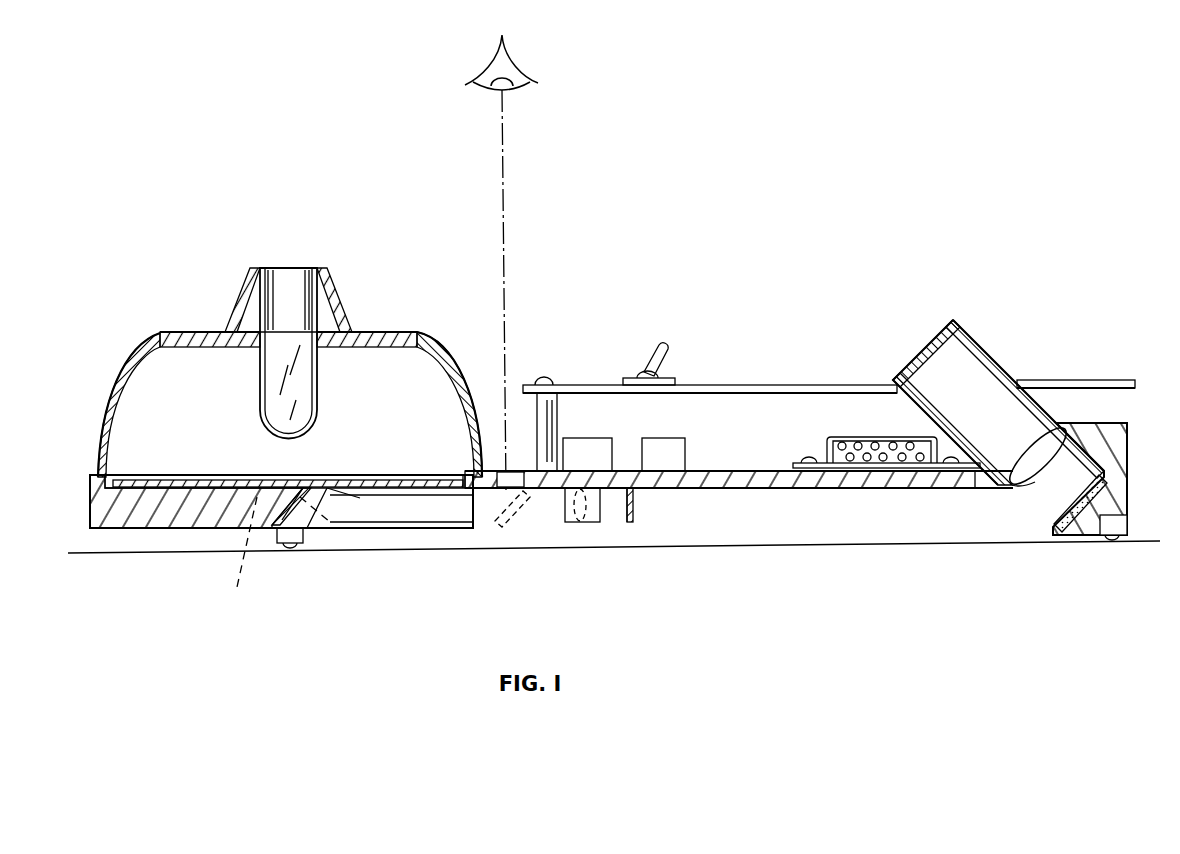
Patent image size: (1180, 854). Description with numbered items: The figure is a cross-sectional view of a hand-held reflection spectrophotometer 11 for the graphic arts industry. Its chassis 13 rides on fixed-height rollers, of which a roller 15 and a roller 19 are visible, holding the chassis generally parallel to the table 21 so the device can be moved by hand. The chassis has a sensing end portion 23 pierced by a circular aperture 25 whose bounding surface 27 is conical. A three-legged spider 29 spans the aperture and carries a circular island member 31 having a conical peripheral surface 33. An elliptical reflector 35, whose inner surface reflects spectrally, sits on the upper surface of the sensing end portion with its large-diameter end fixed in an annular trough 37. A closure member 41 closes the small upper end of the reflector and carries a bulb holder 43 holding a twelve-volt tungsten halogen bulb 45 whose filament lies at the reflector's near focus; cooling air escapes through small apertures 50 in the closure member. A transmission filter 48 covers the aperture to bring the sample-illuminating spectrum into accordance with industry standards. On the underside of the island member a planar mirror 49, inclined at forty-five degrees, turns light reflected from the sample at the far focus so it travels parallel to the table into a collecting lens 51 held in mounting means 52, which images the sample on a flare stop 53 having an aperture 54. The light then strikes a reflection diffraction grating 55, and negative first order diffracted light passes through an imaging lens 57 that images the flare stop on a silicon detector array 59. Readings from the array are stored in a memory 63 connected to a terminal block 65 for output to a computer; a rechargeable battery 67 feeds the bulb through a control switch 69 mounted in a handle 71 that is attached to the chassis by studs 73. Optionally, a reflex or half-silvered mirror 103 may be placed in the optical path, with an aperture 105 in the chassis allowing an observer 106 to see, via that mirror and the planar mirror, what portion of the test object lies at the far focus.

The spectrophotometer 11 is at (697, 353).
The chassis 13 is at (740, 488).
The roller 15 is at (297, 546).
The roller 19 is at (1123, 524).
The table 21 is at (82, 553).
The sensing end portion 23 is at (75, 488).
The aperture 25 is at (335, 525).
The bounding surface 27 is at (365, 525).
The three-legged spider 29 is at (180, 493).
The island member 31 is at (283, 493).
The conical peripheral surface 33 is at (333, 523).
The reflector 35 is at (453, 349).
The annular trough 37 is at (479, 512).
The closure member 41 is at (183, 337).
The bulb holder 43 is at (285, 275).
The tungsten halogen bulb 45 is at (307, 397).
The transmission filter 48 is at (152, 477).
The planar mirror 49 is at (300, 503).
The apertures 50 is at (247, 303).
The collecting lens 51 is at (573, 523).
The mounting means 52 is at (590, 523).
The flare stop 53 is at (633, 506).
The aperture 54 is at (633, 498).
The reflection diffraction grating 55 is at (1073, 493).
The imaging lens 57 is at (1043, 447).
The detector array 59 is at (923, 350).
The memory 63 is at (672, 450).
The terminal block 65 is at (833, 447).
The rechargeable battery 67 is at (592, 449).
The control switch 69 is at (656, 357).
The handle 71 is at (793, 385).
The studs 73 is at (537, 410).
The reflex or half silvered mirror 103 is at (509, 527).
The aperture 105 is at (500, 471).
The observer 106 is at (552, 72).